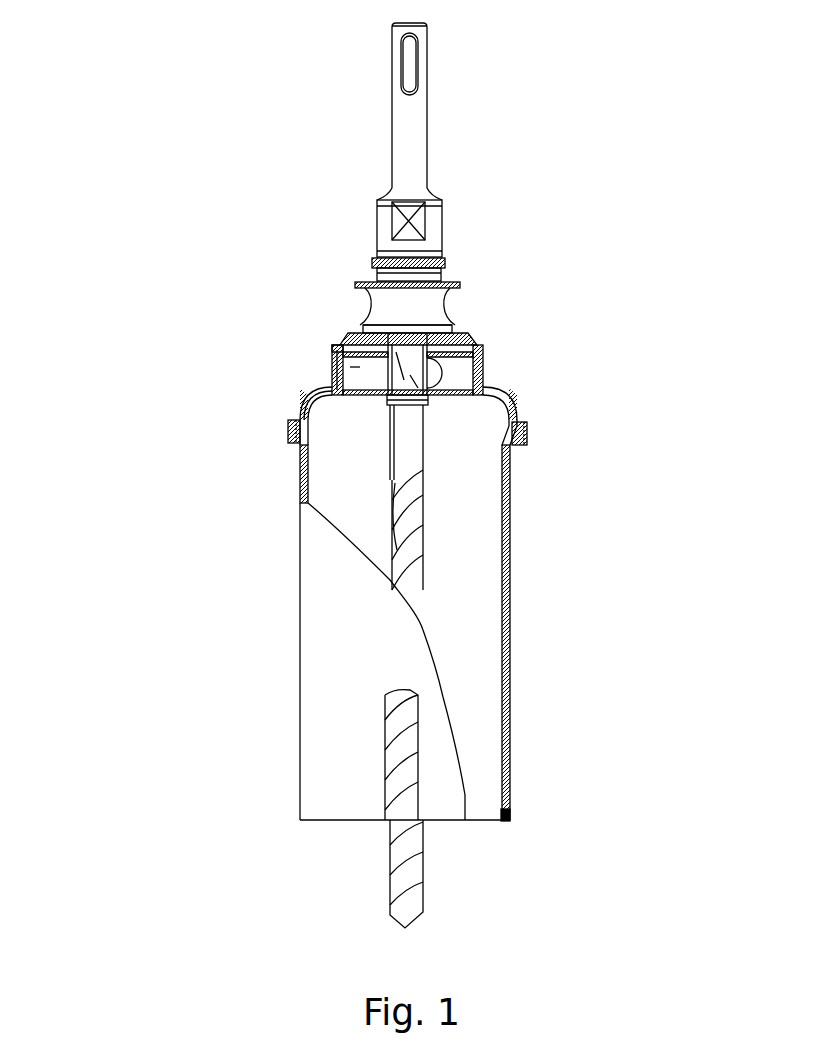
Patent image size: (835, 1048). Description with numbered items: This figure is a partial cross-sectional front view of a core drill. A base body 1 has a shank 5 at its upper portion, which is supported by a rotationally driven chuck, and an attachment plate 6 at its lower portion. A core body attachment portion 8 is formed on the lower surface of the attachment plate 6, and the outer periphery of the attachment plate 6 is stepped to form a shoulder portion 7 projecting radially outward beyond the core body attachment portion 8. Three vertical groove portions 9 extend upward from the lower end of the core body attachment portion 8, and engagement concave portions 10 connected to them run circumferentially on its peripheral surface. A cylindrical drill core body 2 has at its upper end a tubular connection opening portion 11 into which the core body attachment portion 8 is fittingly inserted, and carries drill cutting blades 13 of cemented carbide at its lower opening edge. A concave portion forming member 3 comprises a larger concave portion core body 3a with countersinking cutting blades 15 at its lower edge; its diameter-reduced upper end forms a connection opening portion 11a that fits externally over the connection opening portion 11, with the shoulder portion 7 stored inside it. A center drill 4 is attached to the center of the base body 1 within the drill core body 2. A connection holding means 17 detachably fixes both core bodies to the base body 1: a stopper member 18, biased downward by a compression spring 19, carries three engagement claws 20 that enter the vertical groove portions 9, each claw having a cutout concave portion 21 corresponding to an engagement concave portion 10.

The base body 1 is at (455, 244).
The drill core body 2 is at (514, 592).
The concave portion forming member 3 is at (519, 399).
The concave portion core body 3a is at (298, 405).
The center drill 4 is at (413, 873).
The shank 5 is at (427, 135).
The attachment plate 6 is at (425, 350).
The shoulder portion 7 is at (350, 336).
The core body attachment portion 8 is at (352, 366).
The vertical groove portions 9 is at (390, 375).
The engagement concave portions 10 is at (440, 363).
The connection opening portion 11 is at (485, 371).
The connection opening portion 11a is at (332, 377).
The drill cutting blades 13 is at (510, 820).
The countersinking cutting blades 15 is at (527, 433).
The connection holding means 17 is at (354, 271).
The stopper member 18 is at (440, 305).
The compression spring 19 is at (407, 282).
The engagement claws 20 is at (423, 480).
The cutout concave portion 21 is at (427, 447).